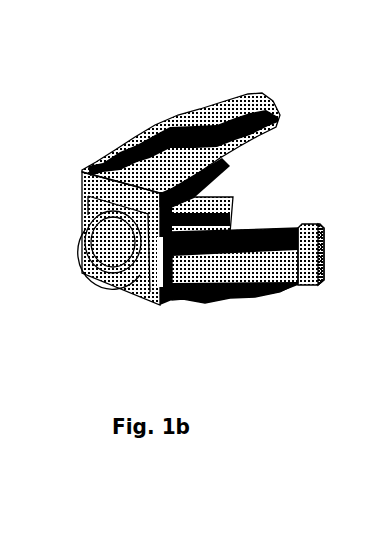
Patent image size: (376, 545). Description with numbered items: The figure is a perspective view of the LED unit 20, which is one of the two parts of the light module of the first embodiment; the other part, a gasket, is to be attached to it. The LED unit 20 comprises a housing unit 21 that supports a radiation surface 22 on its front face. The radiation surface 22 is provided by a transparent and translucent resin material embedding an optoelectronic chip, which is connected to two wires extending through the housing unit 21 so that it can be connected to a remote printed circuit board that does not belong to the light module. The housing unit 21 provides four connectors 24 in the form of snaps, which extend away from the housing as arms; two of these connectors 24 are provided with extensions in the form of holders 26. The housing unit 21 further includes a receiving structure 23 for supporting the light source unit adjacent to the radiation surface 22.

The LED unit 20 is at (180, 92).
The housing unit 21 is at (83, 172).
The radiation surface 22 is at (107, 248).
The receiving structure 23 is at (208, 205).
The connectors 24 is at (274, 232).
The holders 26 is at (317, 283).